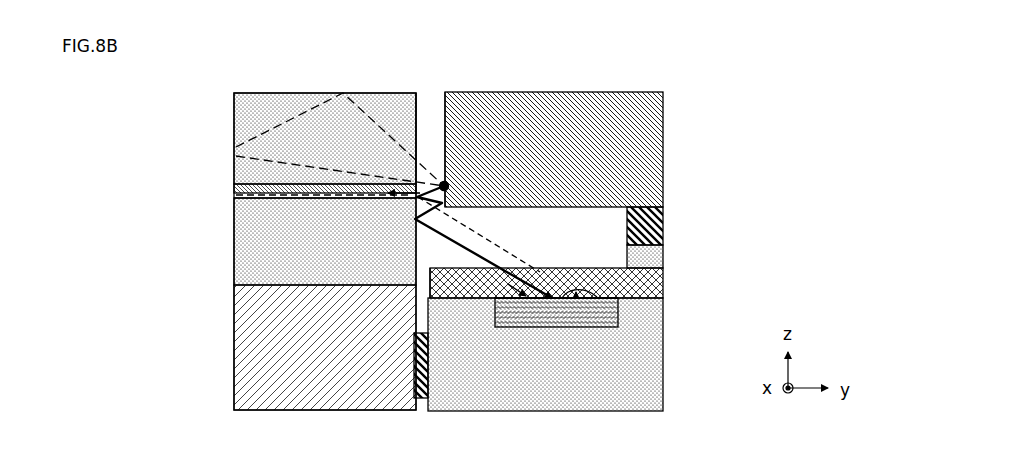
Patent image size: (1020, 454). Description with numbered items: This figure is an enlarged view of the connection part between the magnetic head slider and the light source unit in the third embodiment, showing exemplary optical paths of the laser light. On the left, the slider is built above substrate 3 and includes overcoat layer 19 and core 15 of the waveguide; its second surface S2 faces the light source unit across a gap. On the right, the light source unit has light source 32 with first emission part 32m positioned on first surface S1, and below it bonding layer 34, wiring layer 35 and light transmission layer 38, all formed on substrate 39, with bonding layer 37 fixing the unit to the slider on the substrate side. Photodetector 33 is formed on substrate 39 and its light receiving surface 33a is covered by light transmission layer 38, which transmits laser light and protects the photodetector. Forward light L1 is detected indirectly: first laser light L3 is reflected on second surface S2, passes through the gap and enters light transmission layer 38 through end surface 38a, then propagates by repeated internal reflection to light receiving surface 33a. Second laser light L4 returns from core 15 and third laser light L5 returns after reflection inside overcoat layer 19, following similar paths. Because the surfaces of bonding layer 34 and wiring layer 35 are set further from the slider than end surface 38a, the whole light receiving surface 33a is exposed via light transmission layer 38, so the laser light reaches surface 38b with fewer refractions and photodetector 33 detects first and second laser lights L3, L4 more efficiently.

The substrate 3 is at (240, 370).
The core 15 is at (238, 188).
The overcoat layer 19 is at (236, 170).
The light source 32 is at (652, 152).
The first emission part 32m is at (441, 183).
The photodetector 33 is at (640, 314).
The light receiving surface 33a is at (598, 298).
The bonding layer 34 is at (653, 228).
The wiring layer 35 is at (650, 258).
The bonding layer 37 is at (430, 369).
The light transmission layer 38 is at (650, 282).
The end surface 38a is at (430, 287).
The surface 38b is at (578, 290).
The substrate 39 is at (650, 350).
The first surface S1 is at (447, 122).
The second surface S2 is at (416, 140).
The forward light L1 is at (401, 178).
The first laser light L3 is at (463, 247).
The second laser light L4 is at (478, 238).
The third laser light L5 is at (246, 138).